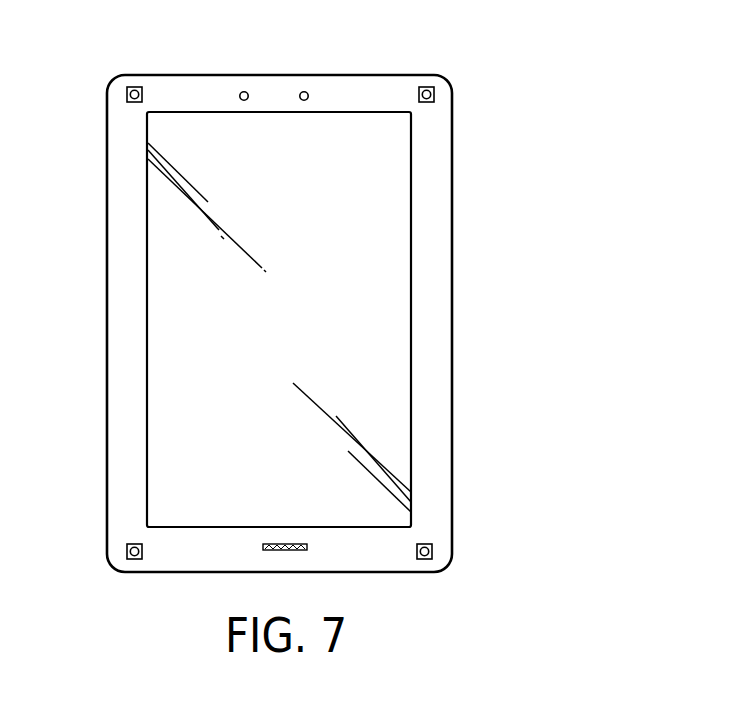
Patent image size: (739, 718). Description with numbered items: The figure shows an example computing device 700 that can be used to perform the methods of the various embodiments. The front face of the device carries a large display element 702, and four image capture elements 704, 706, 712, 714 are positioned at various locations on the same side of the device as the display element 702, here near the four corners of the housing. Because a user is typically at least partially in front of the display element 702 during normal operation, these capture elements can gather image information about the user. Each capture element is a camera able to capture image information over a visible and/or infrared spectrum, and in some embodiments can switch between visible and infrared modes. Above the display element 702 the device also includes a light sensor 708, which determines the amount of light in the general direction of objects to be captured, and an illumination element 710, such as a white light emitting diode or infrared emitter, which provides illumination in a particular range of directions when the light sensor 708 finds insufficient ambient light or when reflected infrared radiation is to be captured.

The computing device 700 is at (599, 128).
The display element 702 is at (147, 123).
The image capture element 704 is at (132, 87).
The image capture element 706 is at (429, 87).
The light sensor 708 is at (307, 92).
The illumination element 710 is at (241, 92).
The image capture element 712 is at (134, 559).
The image capture element 714 is at (425, 559).